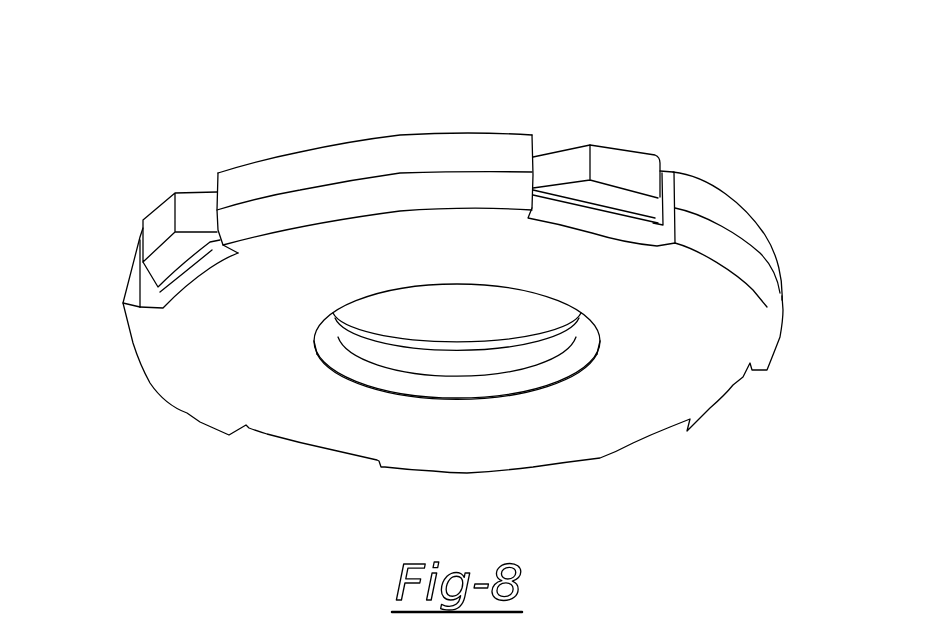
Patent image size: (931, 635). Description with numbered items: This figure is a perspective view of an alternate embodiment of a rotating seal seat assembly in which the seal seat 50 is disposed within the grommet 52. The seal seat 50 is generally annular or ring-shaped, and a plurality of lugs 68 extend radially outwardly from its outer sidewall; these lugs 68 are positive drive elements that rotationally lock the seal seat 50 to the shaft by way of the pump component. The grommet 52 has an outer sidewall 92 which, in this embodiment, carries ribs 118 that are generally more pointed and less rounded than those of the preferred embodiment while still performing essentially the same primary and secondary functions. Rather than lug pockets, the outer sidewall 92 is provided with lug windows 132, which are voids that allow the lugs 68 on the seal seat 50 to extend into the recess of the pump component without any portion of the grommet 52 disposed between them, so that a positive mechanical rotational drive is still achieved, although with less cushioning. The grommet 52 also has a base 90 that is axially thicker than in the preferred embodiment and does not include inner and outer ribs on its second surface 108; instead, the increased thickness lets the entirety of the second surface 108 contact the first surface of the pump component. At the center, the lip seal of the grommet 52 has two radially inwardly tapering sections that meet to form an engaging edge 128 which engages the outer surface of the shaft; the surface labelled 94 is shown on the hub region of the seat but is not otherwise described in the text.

The lug window 132 is at (562, 108).
The rib 118 is at (314, 183).
The grommet 52 is at (405, 212).
The seal seat 50 is at (610, 160).
The lug 68 is at (640, 163).
The outer sidewall 92 is at (121, 302).
The second surface 108 is at (713, 307).
The base 90 is at (707, 372).
The hub 94 is at (350, 348).
The engaging edge 128 is at (532, 352).